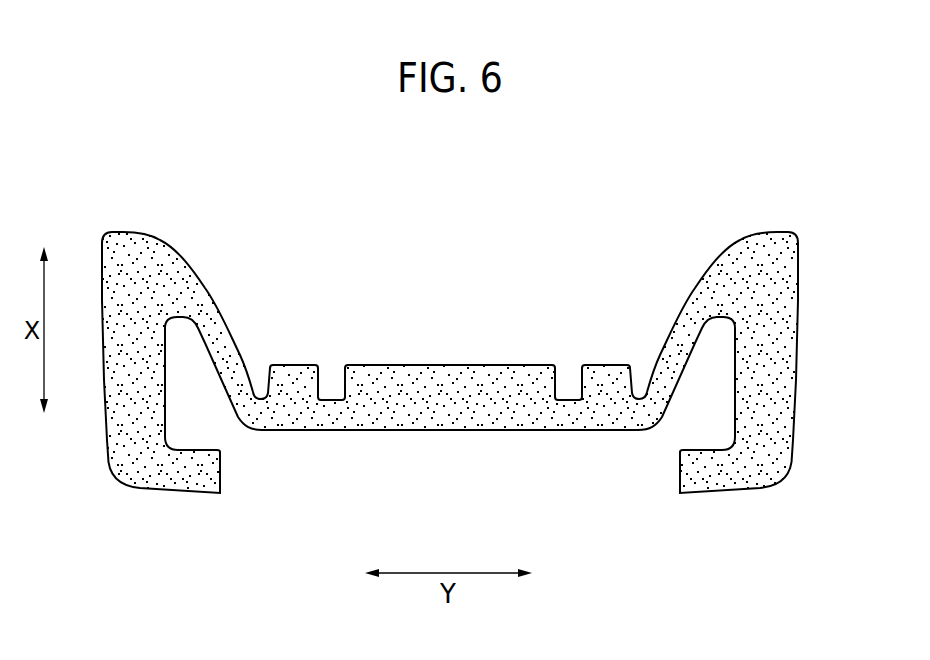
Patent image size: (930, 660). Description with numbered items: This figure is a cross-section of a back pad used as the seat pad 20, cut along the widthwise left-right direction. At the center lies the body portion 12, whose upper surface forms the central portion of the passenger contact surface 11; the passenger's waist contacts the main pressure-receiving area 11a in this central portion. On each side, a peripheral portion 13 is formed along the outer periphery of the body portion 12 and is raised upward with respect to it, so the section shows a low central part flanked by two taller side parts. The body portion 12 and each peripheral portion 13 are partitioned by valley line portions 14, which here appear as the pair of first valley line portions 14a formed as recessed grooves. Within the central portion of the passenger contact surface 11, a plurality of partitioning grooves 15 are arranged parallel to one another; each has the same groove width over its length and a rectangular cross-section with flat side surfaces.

The seat pad 20 is at (702, 138).
The peripheral portion 13 is at (123, 248).
The body portion 12 is at (447, 410).
The passenger contact surface 11 is at (448, 365).
The main pressure-receiving area 11a is at (450, 320).
The valley line portions 14 is at (452, 329).
The first valley line portions 14a is at (262, 383).
The partitioning grooves 15 is at (340, 387).